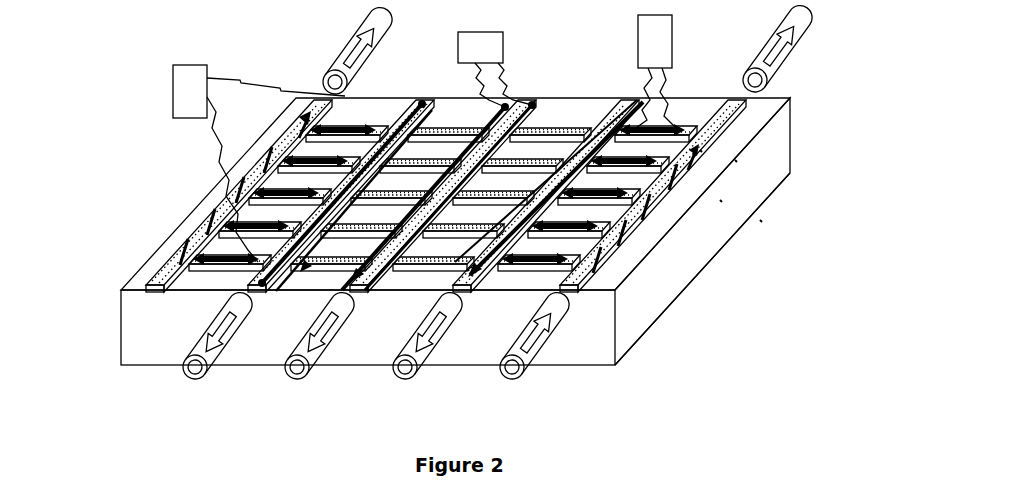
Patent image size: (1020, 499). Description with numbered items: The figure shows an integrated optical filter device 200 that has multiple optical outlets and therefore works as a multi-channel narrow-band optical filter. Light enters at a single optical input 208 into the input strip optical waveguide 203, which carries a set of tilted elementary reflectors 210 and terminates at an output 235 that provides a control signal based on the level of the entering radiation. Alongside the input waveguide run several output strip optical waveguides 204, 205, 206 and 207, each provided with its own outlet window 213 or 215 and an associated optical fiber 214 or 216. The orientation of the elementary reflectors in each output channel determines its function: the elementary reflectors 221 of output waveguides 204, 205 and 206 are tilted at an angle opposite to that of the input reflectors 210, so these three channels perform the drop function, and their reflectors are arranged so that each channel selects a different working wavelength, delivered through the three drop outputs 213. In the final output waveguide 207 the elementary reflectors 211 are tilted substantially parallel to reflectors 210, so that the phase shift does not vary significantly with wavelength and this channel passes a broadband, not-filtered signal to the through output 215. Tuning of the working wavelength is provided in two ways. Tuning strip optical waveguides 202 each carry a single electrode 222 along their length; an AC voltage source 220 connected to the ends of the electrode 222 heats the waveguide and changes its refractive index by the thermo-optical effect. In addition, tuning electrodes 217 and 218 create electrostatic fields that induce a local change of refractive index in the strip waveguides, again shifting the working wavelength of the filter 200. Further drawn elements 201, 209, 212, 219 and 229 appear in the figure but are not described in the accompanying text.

The integrated optical filter device 200 is at (258, 72).
The substrate 201 is at (712, 233).
The tuning strip optical waveguides 202 is at (641, 108).
The input strip optical waveguide 203 is at (698, 167).
The output strip optical waveguide 204 is at (626, 108).
The output strip optical waveguide 205 is at (500, 128).
The output strip optical waveguide 206 is at (420, 102).
The final output strip optical waveguide 207 is at (172, 258).
The optical input 208 is at (590, 307).
The roller 209 is at (548, 343).
The elementary reflectors of the input strip optical waveguide 210 is at (662, 260).
The elementary reflectors of output strip optical waveguide 207 211 is at (215, 207).
The roller 212 is at (790, 60).
The outlet window 213 is at (463, 300).
The optical fiber 214 is at (433, 395).
The outlet window 215 is at (326, 93).
The optical fiber 216 is at (340, 58).
The tuning electrode 217 is at (495, 118).
The tuning electrode 218 is at (333, 185).
The power supply 219 is at (505, 52).
The AC voltage source 220 is at (636, 24).
The elementary reflectors of output strip optical waveguides 221 is at (387, 277).
The electrode 222 is at (668, 108).
The power supply 229 is at (173, 97).
The output of waveguide 203 235 is at (741, 100).